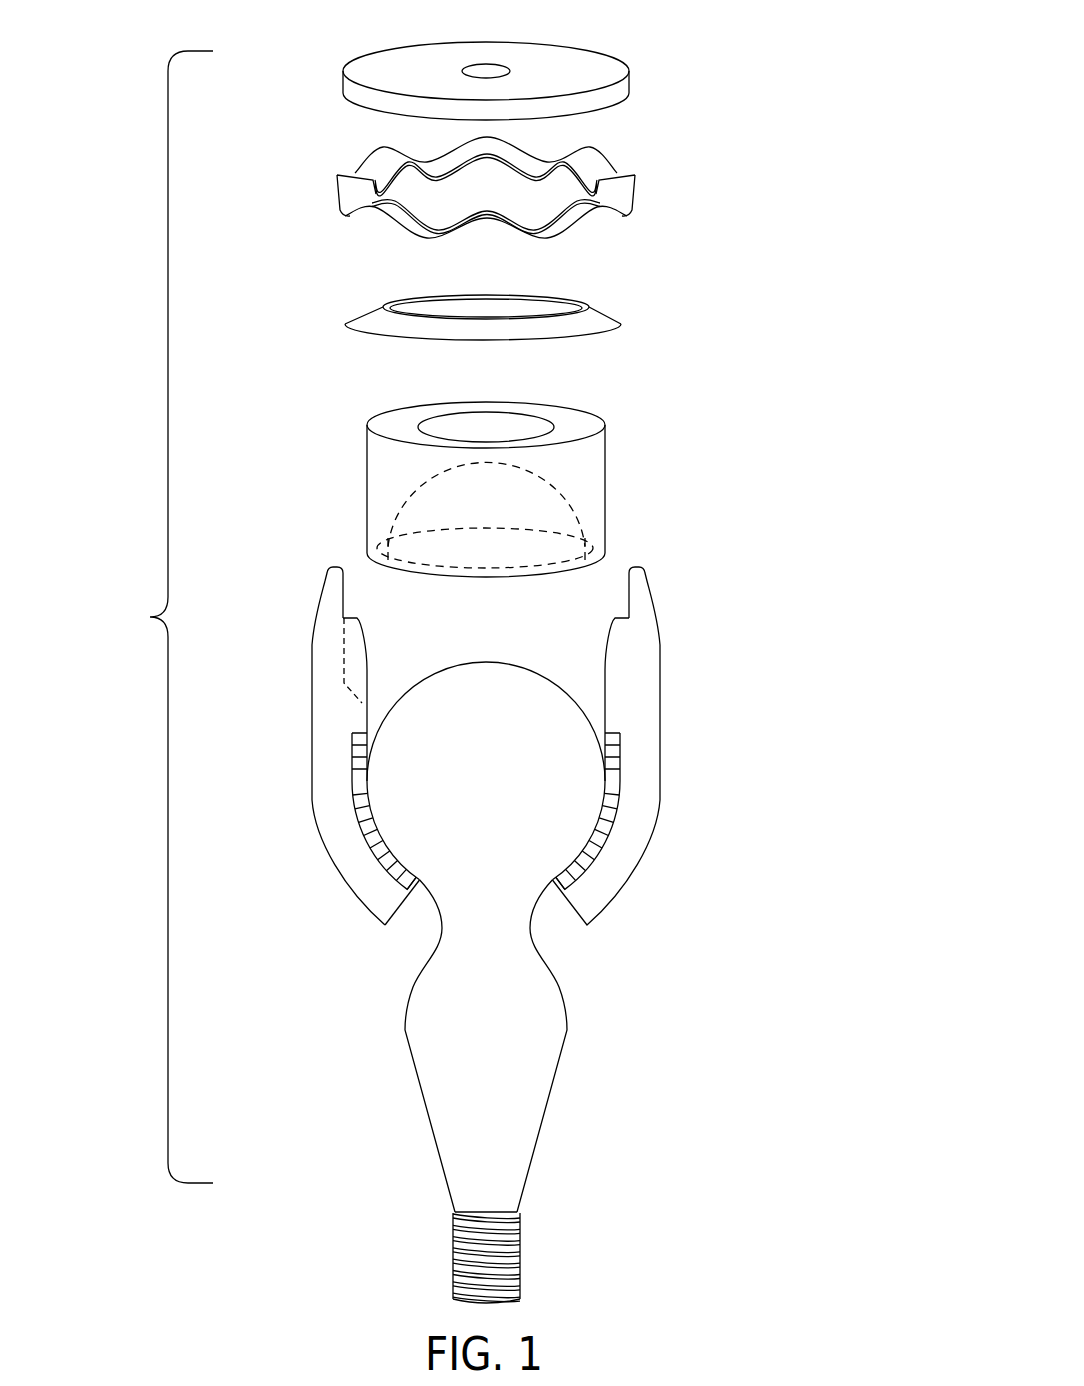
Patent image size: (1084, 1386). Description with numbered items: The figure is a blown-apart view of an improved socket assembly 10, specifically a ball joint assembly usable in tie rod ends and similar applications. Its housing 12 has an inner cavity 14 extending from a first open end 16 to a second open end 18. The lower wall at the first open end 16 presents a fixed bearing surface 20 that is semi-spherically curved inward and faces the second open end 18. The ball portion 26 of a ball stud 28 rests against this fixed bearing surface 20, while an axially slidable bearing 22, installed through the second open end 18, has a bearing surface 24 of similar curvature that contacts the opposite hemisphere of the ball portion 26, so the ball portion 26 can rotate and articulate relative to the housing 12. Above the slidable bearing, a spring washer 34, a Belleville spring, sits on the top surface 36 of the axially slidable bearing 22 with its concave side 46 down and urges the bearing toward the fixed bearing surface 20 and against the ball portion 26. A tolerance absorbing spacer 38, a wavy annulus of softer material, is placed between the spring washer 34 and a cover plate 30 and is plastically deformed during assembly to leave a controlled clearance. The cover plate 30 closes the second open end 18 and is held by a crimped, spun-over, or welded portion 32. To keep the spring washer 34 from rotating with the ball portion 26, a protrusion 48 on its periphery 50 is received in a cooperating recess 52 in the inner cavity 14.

The socket assembly 10 is at (150, 617).
The housing 12 is at (520, 935).
The inner cavity 14 is at (367, 670).
The first open end 16 is at (413, 890).
The second open end 18 is at (577, 688).
The fixed bearing surface 20 is at (356, 793).
The axially slidable bearing 22 is at (524, 454).
The bearing surface 24 is at (427, 470).
The ball portion 26 is at (485, 663).
The ball stud 28 is at (570, 1033).
The cover plate 30 is at (630, 82).
The crimped, spun-over, or welded portion 32 is at (327, 577).
The spring washer 34 is at (504, 313).
The top surface 36 is at (592, 425).
The tolerance absorbing spacer 38 is at (645, 173).
The concave side 46 is at (415, 307).
The protrusion 48 is at (347, 327).
The periphery 50 is at (373, 333).
The recess 52 is at (343, 683).